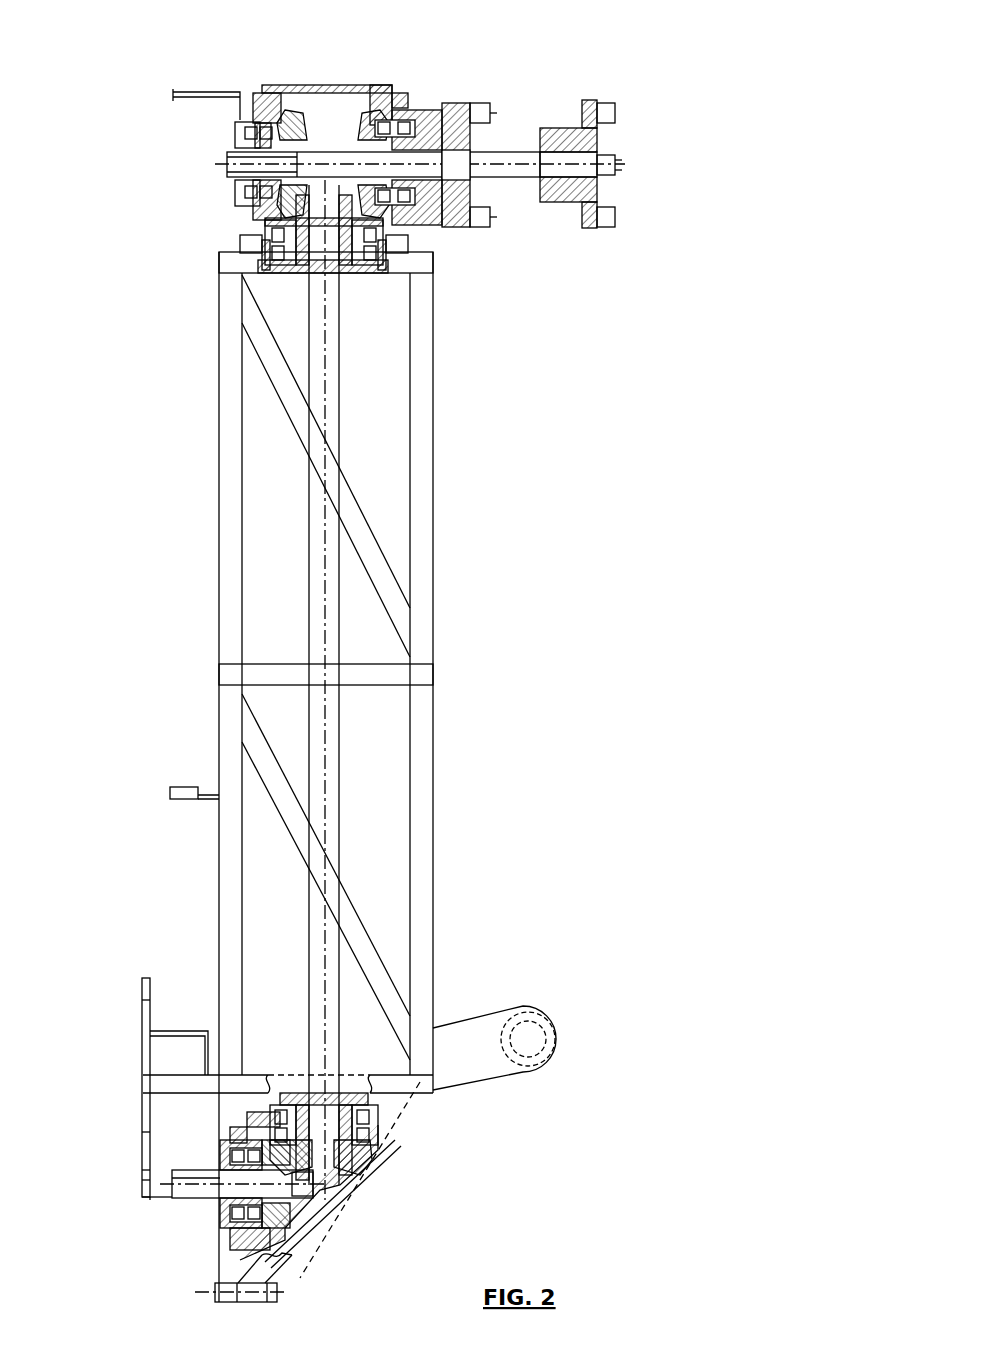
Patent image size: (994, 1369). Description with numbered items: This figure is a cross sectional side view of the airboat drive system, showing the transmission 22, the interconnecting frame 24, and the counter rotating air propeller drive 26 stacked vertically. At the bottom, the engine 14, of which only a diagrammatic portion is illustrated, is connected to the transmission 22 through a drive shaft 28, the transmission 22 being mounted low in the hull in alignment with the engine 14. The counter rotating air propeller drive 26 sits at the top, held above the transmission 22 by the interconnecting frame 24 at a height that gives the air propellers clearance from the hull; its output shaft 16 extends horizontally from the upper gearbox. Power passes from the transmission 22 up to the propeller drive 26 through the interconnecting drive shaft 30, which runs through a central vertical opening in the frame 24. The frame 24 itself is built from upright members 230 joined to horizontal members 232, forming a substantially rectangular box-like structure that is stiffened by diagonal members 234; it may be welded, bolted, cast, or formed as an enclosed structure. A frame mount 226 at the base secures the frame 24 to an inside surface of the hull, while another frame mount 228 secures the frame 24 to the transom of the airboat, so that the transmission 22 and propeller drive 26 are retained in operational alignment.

The engine 14 is at (148, 1118).
The drive shaft 16 is at (562, 53).
The transmission 22 is at (390, 1175).
The interconnecting frame 24 is at (447, 537).
The counter rotating air propeller drive 26 is at (410, 80).
The drive shaft 28 is at (182, 1200).
The interconnecting drive shaft 30 is at (340, 770).
The frame mount 226 is at (273, 1302).
The frame mount 228 is at (560, 1048).
The upright members 230 is at (424, 405).
The horizontal members 232 is at (388, 262).
The diagonal members 234 is at (395, 577).